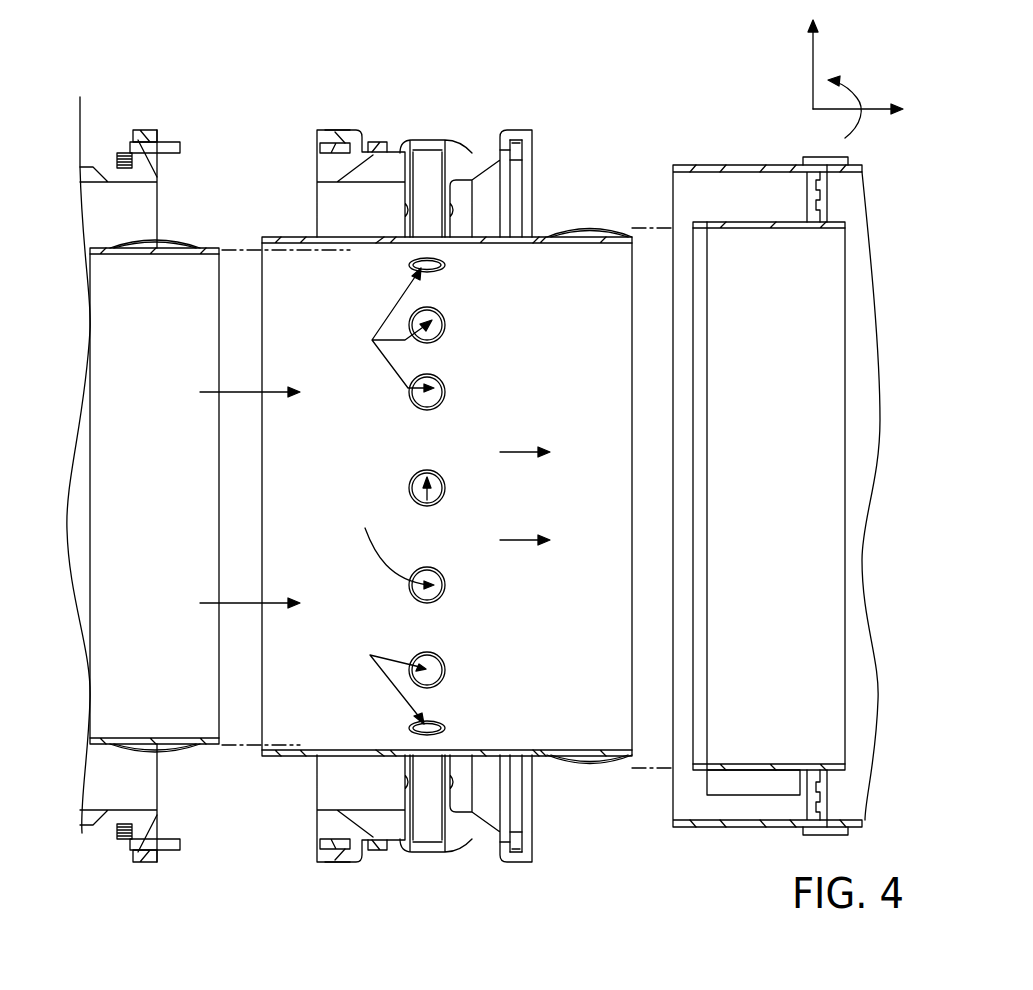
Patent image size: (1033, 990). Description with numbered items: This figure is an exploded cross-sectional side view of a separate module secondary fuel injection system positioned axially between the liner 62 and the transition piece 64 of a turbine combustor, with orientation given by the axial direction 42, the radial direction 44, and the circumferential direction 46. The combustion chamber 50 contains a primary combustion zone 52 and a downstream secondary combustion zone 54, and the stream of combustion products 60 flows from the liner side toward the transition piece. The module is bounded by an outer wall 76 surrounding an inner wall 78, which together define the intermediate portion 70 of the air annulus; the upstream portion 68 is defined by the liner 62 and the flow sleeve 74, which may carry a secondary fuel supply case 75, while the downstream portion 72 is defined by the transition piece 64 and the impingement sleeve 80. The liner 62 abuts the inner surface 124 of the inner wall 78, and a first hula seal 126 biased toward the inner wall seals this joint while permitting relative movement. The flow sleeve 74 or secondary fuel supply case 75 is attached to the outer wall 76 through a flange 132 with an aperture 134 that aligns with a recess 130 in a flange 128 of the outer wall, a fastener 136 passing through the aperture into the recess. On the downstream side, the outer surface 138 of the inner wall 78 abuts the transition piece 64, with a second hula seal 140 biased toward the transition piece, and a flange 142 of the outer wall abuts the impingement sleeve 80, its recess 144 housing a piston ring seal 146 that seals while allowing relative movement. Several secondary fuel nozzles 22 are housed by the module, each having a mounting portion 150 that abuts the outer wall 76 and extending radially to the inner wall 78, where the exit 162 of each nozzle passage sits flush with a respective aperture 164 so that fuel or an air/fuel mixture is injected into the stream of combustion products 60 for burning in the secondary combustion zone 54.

The secondary fuel nozzle 22 is at (430, 142).
The axial direction 42 is at (830, 112).
The radial direction 44 is at (812, 70).
The circumferential direction 46 is at (857, 90).
The combustion chamber 50 is at (316, 466).
The primary combustion zone 52 is at (154, 512).
The secondary combustion zone 54 is at (796, 464).
The stream of combustion products 60 is at (199, 390).
The liner 62 is at (100, 252).
The transition piece 64 is at (768, 228).
The upstream portion of the annulus 68 is at (126, 219).
The intermediate portion of the annulus 70 is at (355, 238).
The downstream portion of the annulus 72 is at (758, 211).
The flow sleeve 74 is at (87, 852).
The secondary fuel supply case 75 is at (80, 97).
The outer wall 76 is at (488, 160).
The inner wall 78 is at (304, 238).
The impingement sleeve 80 is at (746, 168).
The inner surface 124 is at (380, 244).
The first hula seal 126 is at (172, 240).
The flange 128 is at (342, 132).
The recess 130 is at (322, 150).
The flange 132 is at (140, 118).
The aperture 134 is at (150, 134).
The fastener 136 is at (122, 150).
The outer surface 138 is at (536, 237).
The second hula seal 140 is at (585, 228).
The flange 142 is at (515, 133).
The recess 144 is at (522, 150).
The piston ring seal 146 is at (520, 158).
The mounting portion 150 is at (380, 145).
The exit 162 is at (382, 496).
The aperture 164 is at (445, 264).